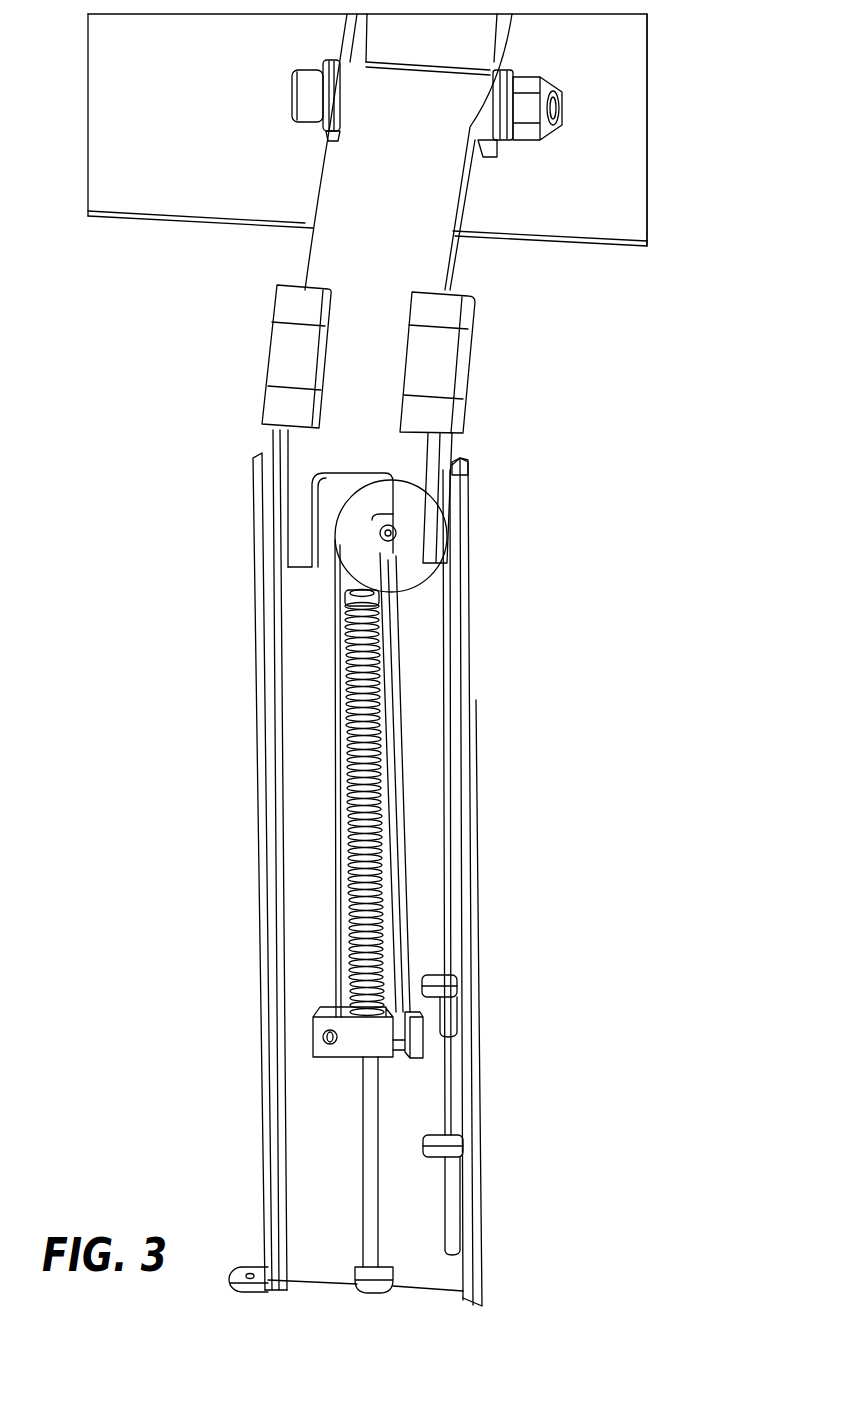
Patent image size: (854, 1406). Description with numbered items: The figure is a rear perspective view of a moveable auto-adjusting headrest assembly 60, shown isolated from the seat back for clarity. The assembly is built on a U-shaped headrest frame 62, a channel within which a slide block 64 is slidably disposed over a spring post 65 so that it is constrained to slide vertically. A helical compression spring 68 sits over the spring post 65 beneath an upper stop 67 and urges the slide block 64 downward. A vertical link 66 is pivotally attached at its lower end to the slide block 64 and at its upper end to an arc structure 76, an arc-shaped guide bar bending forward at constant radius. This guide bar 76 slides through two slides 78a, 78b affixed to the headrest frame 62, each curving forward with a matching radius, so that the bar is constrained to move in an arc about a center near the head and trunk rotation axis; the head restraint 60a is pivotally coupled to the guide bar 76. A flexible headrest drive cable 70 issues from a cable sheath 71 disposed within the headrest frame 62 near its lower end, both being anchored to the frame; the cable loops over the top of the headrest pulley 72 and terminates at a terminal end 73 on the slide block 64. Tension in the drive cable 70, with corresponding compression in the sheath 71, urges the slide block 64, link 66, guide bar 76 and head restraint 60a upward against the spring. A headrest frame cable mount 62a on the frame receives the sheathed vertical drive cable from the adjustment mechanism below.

The headrest assembly 60 is at (640, 193).
The head restraint 60a is at (640, 68).
The headrest frame 62 is at (486, 1280).
The headrest frame cable mount 62a is at (243, 1265).
The slide block 64 is at (422, 1032).
The spring post 65 is at (370, 1182).
The vertical link 66 is at (410, 937).
The upper stop 67 is at (345, 598).
The helical compression spring 68 is at (383, 855).
The headrest drive cable 70 is at (452, 790).
The cable sheath 71 is at (452, 1120).
The headrest pulley 72 is at (408, 578).
The terminal end 73 is at (325, 1035).
The arc structure 76 is at (458, 460).
The slide 78a is at (270, 350).
The slide 78b is at (455, 295).